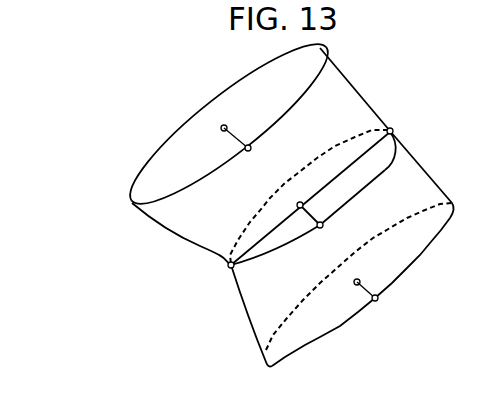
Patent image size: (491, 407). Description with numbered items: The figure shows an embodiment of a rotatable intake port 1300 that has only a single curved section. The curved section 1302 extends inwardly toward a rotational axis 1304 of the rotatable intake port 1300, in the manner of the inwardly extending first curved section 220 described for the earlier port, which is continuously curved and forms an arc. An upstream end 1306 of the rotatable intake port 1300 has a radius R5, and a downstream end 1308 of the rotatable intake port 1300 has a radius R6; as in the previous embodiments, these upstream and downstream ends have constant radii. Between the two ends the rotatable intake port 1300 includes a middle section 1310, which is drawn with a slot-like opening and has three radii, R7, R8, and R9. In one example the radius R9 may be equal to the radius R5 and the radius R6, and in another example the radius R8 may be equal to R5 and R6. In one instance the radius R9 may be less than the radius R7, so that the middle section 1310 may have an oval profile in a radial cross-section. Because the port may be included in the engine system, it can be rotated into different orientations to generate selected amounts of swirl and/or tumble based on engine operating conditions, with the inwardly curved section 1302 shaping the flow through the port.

The rotatable intake port 1300 is at (96, 122).
The curved section 1302 is at (228, 216).
The rotational axis 1304 is at (397, 164).
The upstream end 1306 is at (181, 141).
The downstream end 1308 is at (412, 300).
The middle section 1310 is at (313, 171).
The first curved section 220 is at (282, 285).
The radius of the upstream end R5 is at (224, 131).
The radius of the downstream end R6 is at (356, 285).
The middle section radius R7 is at (348, 172).
The middle section radius R8 is at (319, 228).
The middle section radius R9 is at (299, 204).